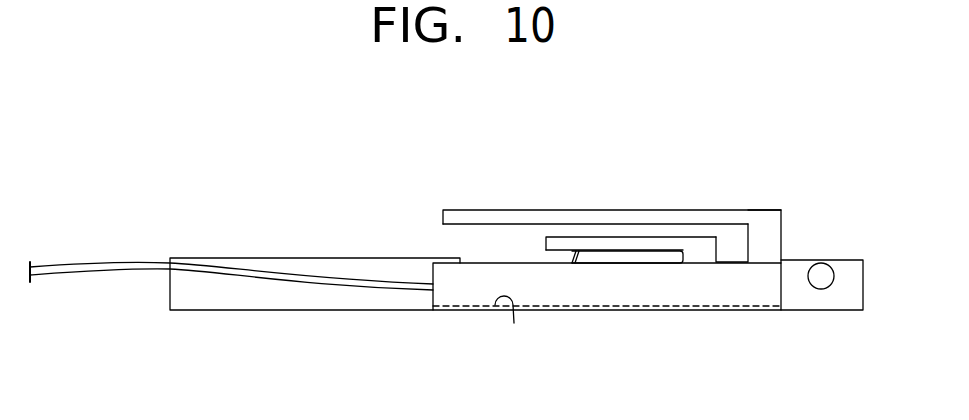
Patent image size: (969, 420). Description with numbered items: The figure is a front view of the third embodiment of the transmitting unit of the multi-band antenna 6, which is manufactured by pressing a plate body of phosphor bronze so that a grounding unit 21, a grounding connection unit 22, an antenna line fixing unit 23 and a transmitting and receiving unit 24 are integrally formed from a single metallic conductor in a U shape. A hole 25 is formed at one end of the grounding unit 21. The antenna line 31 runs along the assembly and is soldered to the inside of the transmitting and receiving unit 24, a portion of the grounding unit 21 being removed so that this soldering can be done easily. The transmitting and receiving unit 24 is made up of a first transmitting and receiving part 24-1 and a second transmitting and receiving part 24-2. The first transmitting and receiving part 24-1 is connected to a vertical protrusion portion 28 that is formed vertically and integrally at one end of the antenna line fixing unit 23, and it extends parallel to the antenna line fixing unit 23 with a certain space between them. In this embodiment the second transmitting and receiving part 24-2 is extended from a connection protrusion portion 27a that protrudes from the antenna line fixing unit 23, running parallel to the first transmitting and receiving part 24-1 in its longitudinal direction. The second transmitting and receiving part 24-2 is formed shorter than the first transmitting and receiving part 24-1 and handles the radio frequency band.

The multi-band antenna 6 is at (812, 222).
The grounding unit 21 is at (267, 293).
The grounding connection unit 22 is at (514, 323).
The antenna line fixing unit 23 is at (643, 285).
The transmitting and receiving unit 24 is at (638, 121).
The first transmitting and receiving part 24-1 is at (563, 217).
The second transmitting and receiving part 24-2 is at (627, 245).
The hole 25 is at (823, 278).
The connection protrusion portion 27a is at (701, 250).
The vertical protrusion portion 28 is at (772, 240).
The antenna line 31 is at (112, 272).